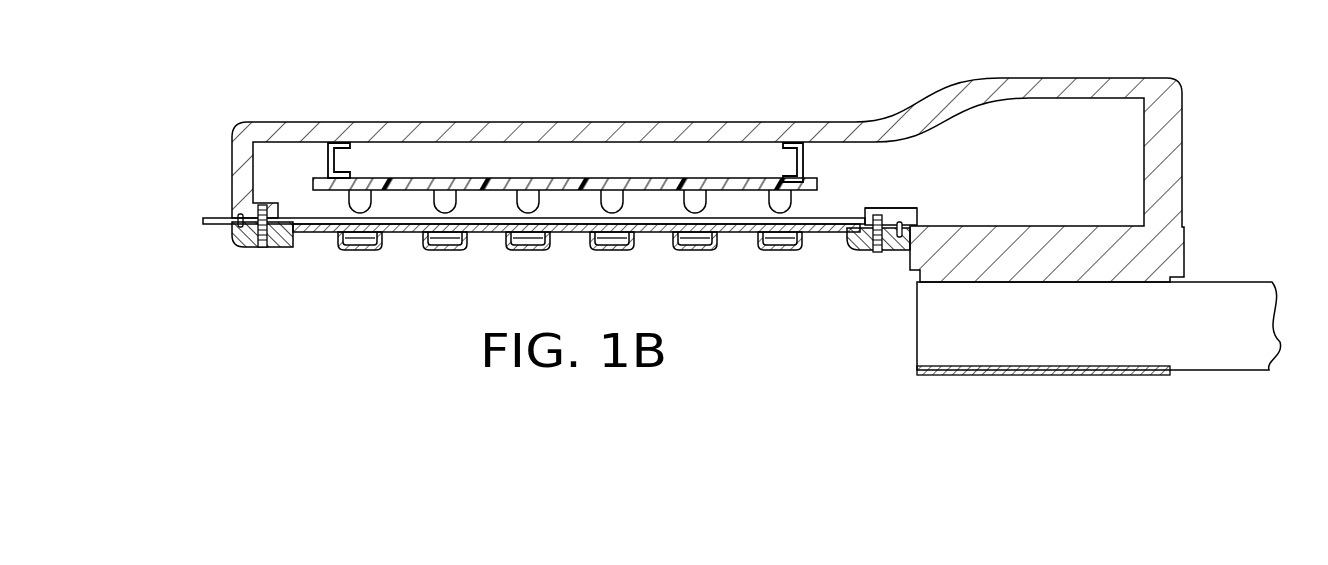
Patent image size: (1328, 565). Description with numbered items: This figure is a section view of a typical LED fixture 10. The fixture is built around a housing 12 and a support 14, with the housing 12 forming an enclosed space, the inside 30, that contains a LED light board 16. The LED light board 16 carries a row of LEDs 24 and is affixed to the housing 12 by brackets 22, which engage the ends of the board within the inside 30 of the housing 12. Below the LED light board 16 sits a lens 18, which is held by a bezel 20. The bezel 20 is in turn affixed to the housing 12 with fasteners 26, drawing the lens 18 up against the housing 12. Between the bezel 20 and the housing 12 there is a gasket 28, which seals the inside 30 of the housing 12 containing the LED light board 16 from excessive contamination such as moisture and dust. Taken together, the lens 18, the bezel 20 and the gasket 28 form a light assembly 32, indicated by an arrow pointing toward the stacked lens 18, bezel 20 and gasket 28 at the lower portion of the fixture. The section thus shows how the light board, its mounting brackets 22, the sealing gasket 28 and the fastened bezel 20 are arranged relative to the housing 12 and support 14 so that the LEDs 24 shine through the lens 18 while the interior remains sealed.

The LED fixture 10 is at (1137, 55).
The housing 12 is at (1173, 85).
The support 14 is at (1202, 283).
The LED light board 16 is at (545, 179).
The lens 18 is at (570, 250).
The bezel 20 is at (890, 247).
The brackets 22 is at (330, 160).
The LEDs 24 is at (347, 203).
The fasteners 26 is at (877, 253).
The gasket 28 is at (895, 225).
The inside of the housing 30 is at (998, 185).
The light assembly 32 is at (298, 285).